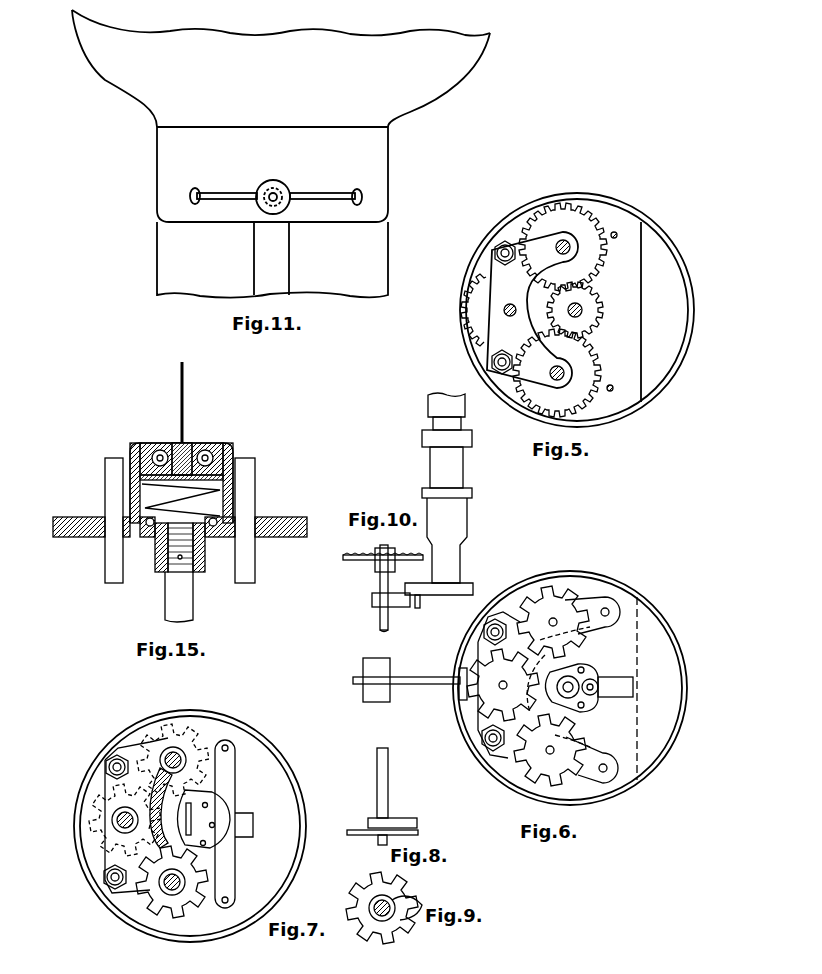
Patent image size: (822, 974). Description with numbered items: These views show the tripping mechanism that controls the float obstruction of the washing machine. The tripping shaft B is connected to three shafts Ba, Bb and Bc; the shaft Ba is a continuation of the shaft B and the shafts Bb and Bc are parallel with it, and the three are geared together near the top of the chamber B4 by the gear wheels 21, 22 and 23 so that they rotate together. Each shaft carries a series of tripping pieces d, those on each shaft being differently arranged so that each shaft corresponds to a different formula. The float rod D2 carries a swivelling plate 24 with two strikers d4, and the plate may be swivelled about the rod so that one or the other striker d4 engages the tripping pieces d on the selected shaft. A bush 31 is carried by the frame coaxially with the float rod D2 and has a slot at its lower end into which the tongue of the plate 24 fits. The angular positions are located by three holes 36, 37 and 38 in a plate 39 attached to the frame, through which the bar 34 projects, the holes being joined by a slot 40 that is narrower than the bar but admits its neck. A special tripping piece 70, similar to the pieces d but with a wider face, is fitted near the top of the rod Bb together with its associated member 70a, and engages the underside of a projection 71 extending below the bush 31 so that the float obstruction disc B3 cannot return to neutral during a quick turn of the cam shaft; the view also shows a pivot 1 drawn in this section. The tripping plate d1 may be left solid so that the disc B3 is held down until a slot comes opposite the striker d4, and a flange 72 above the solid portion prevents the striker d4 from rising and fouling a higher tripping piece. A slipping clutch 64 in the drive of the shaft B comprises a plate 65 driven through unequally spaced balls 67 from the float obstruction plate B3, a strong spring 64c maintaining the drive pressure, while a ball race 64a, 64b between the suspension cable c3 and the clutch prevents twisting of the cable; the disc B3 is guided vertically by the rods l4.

In FIG. 11, the bar 34 is at (270, 187).
In FIG. 11, the hole 36 is at (199, 192).
In FIG. 11, the hole 37 is at (275, 189).
In FIG. 11, the hole 38 is at (354, 192).
In FIG. 11, the plate 39 is at (190, 155).
In FIG. 11, the slot 40 is at (222, 198).
In FIG. 11, the chamber B4 is at (344, 258).
In FIG. 5, the chamber B4 is at (627, 230).
In FIG. 6, the chamber B4 is at (542, 583).
In FIG. 7, the chamber B4 is at (280, 782).
In FIG. 5, the shaft Bc is at (559, 240).
In FIG. 6, the shaft Bc is at (557, 618).
In FIG. 7, the shaft Bc is at (167, 883).
In FIG. 5, the gear wheel 23 is at (572, 223).
In FIG. 5, the gear wheel 22 is at (480, 302).
In FIG. 5, the shaft Ba is at (508, 306).
In FIG. 6, the shaft Ba is at (500, 682).
In FIG. 7, the shaft Ba is at (117, 817).
In FIG. 5, the float rod D2 is at (580, 308).
In FIG. 6, the float rod D2 is at (574, 694).
In FIG. 5, the gear wheel 21 is at (582, 360).
In FIG. 10, the gear wheel 21 is at (360, 561).
In FIG. 5, the shaft Bb is at (564, 372).
In FIG. 10, the shaft Bb is at (380, 624).
In FIG. 6, the shaft Bb is at (548, 753).
In FIG. 7, the shaft Bb is at (182, 748).
In FIG. 8, the shaft Bb is at (381, 752).
In FIG. 15, the cable c3 is at (185, 378).
In FIG. 15, the ball race 64b is at (142, 444).
In FIG. 15, the slipping clutch 64 is at (181, 467).
In FIG. 15, the ball race 64a is at (215, 445).
In FIG. 15, the spring 64c is at (212, 486).
In FIG. 15, the float obstruction disc B3 is at (70, 522).
In FIG. 15, the guide rods l4 is at (112, 563).
In FIG. 15, the plate 65 is at (152, 527).
In FIG. 15, the balls 67 is at (213, 528).
In FIG. 15, the tripping shaft B is at (180, 572).
In FIG. 10, the bush 31 is at (439, 494).
In FIG. 10, the special tripping piece 70 is at (372, 600).
In FIG. 7, the special tripping piece 70 is at (170, 748).
In FIG. 10, the projection 71 is at (418, 598).
In FIG. 6, the tripping plate d1 is at (556, 618).
In FIG. 7, the tripping plate d1 is at (163, 727).
In FIG. 8, the tripping plate d1 is at (356, 828).
In FIG. 9, the tripping plate d1 is at (374, 906).
In FIG. 6, the striker d4 is at (552, 668).
In FIG. 7, the striker d4 is at (185, 825).
In FIG. 6, the bar end b is at (666, 673).
In FIG. 7, the bar end b is at (284, 805).
In FIG. 6, the swivelling plate 24 is at (634, 688).
In FIG. 7, the swivelling plate 24 is at (210, 805).
In FIG. 7, the lever bar 70a is at (200, 765).
In FIG. 7, the pivot 1 is at (168, 817).
In FIG. 7, the tripping pieces d is at (132, 825).
In FIG. 8, the flange 72 is at (398, 820).
In FIG. 9, the flange 72 is at (414, 907).